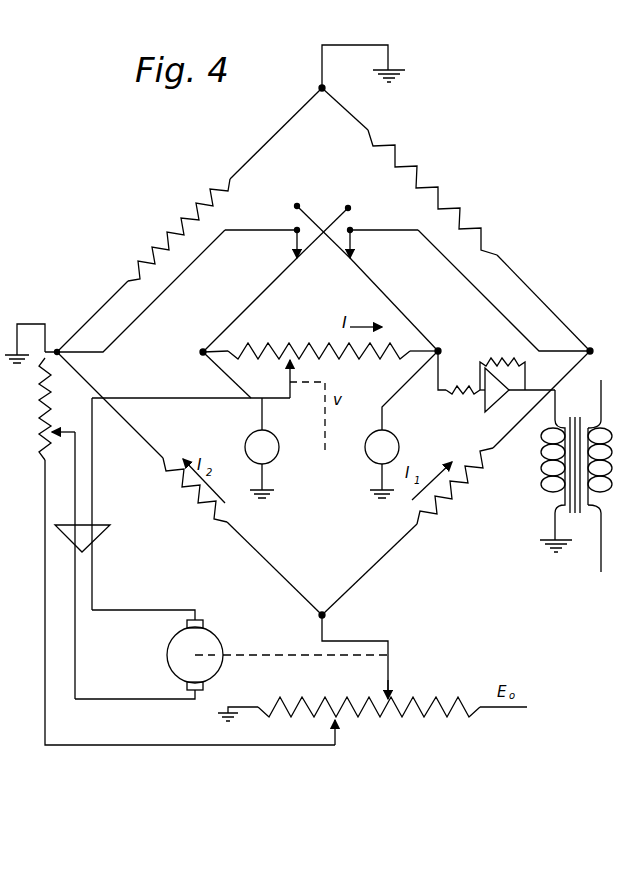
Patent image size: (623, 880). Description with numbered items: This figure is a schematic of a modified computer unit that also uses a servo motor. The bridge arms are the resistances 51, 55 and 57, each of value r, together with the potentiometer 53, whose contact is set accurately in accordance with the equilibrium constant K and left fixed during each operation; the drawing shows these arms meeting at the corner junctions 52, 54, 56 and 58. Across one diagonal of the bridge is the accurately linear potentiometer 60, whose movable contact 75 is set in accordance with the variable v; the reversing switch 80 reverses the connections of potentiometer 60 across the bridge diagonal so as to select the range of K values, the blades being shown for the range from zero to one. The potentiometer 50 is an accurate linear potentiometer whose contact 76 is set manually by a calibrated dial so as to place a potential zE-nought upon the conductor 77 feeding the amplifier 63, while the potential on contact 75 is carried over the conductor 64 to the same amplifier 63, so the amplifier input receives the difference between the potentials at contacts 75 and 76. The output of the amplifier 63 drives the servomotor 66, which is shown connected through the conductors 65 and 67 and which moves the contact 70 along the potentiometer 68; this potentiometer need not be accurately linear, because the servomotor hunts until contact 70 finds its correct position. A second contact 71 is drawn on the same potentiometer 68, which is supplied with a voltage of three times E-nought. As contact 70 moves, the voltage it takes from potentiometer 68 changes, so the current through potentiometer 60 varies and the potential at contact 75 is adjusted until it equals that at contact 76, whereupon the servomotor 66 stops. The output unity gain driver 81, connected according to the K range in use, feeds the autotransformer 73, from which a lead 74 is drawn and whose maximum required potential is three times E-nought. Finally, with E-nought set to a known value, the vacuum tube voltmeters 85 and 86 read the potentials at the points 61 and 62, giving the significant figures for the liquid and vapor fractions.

The potentiometer 50 is at (52, 390).
The bridge arm resistance 51 is at (163, 236).
The bridge junction 52 is at (318, 89).
The potentiometer 53 is at (452, 197).
The bridge junction 54 is at (594, 349).
The bridge arm resistance 55 is at (457, 497).
The bridge point 56 is at (332, 613).
The bridge arm resistance 57 is at (184, 499).
The bridge junction 58 is at (73, 356).
The potentiometer 60 is at (309, 345).
The point 61 is at (200, 356).
The point 62 is at (440, 351).
The amplifier 63 is at (92, 538).
The conductor 64 is at (185, 400).
The conductor 65 is at (143, 609).
The servomotor 66 is at (208, 627).
The conductor 67 is at (110, 700).
The potentiometer 68 is at (408, 692).
The contact 70 is at (385, 695).
The potentiometer wiper 71 is at (340, 722).
The autotransformer 73 is at (577, 412).
The transformer output lead 74 is at (594, 515).
The movable contact 75 is at (299, 361).
The contact 76 is at (62, 565).
The conductor 77 is at (93, 483).
The reversing switch 80 is at (322, 212).
The output unity gain driver 81 is at (484, 406).
The vacuum tube voltmeter 85 is at (400, 447).
The vacuum tube voltmeter 86 is at (280, 447).